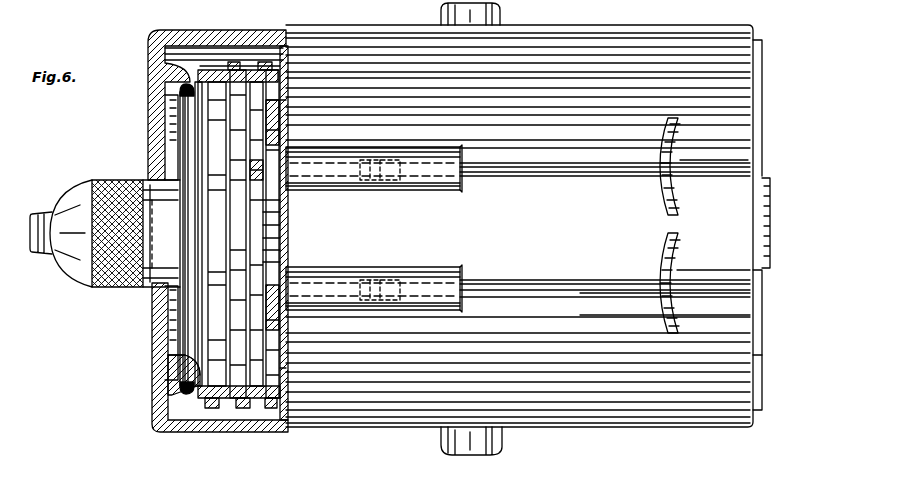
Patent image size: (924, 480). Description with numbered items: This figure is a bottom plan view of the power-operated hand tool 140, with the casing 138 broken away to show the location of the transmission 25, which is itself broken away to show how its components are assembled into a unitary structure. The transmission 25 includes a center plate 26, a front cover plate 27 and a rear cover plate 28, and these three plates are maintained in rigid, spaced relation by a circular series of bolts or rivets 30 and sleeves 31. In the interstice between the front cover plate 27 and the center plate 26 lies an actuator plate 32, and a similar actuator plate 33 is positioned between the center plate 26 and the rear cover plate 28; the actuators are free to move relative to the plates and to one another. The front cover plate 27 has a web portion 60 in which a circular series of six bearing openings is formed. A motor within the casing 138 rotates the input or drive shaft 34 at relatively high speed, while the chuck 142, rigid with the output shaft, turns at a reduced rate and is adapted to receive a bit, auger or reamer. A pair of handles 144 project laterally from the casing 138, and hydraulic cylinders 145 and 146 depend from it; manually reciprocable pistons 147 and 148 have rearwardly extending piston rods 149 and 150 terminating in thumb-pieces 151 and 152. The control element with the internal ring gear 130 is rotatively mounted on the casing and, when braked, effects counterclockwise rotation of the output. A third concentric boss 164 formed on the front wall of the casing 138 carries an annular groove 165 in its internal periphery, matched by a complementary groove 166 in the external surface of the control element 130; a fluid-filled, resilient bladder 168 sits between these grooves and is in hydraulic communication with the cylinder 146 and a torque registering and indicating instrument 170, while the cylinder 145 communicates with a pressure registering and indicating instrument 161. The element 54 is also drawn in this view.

The transmission unitary structure 25 is at (275, 414).
The center plate 26 is at (284, 218).
The front cover plate 27 is at (203, 168).
The rear cover plate 28 is at (286, 353).
The bolts or rivets 30 is at (218, 70).
The sleeves 31 is at (248, 70).
The actuator plate 32 is at (220, 333).
The actuator plate 33 is at (282, 200).
The input or drive shaft 34 is at (284, 232).
The ring 54 is at (282, 103).
The web portion 60 is at (205, 100).
The control with internal ring gear 130 is at (172, 135).
The casing 138 is at (155, 424).
The power-operated hand tool 140 is at (110, 390).
The chuck 142 is at (108, 288).
The handles 144 is at (457, 15).
The hydraulic cylinder 145 is at (333, 167).
The hydraulic cylinder 146 is at (320, 273).
The piston 147 is at (382, 175).
The piston 148 is at (378, 282).
The piston rod 149 is at (472, 178).
The piston rod 150 is at (490, 281).
The thumb-piece 151 is at (660, 196).
The thumb-piece 152 is at (660, 262).
The pressure registering and indicating instrument 161 is at (762, 118).
The third concentric boss 164 is at (165, 380).
The annular groove 165 is at (189, 395).
The complementary groove 166 is at (178, 303).
The bladder 168 is at (186, 80).
The torque registering and indicating instrument 170 is at (760, 360).